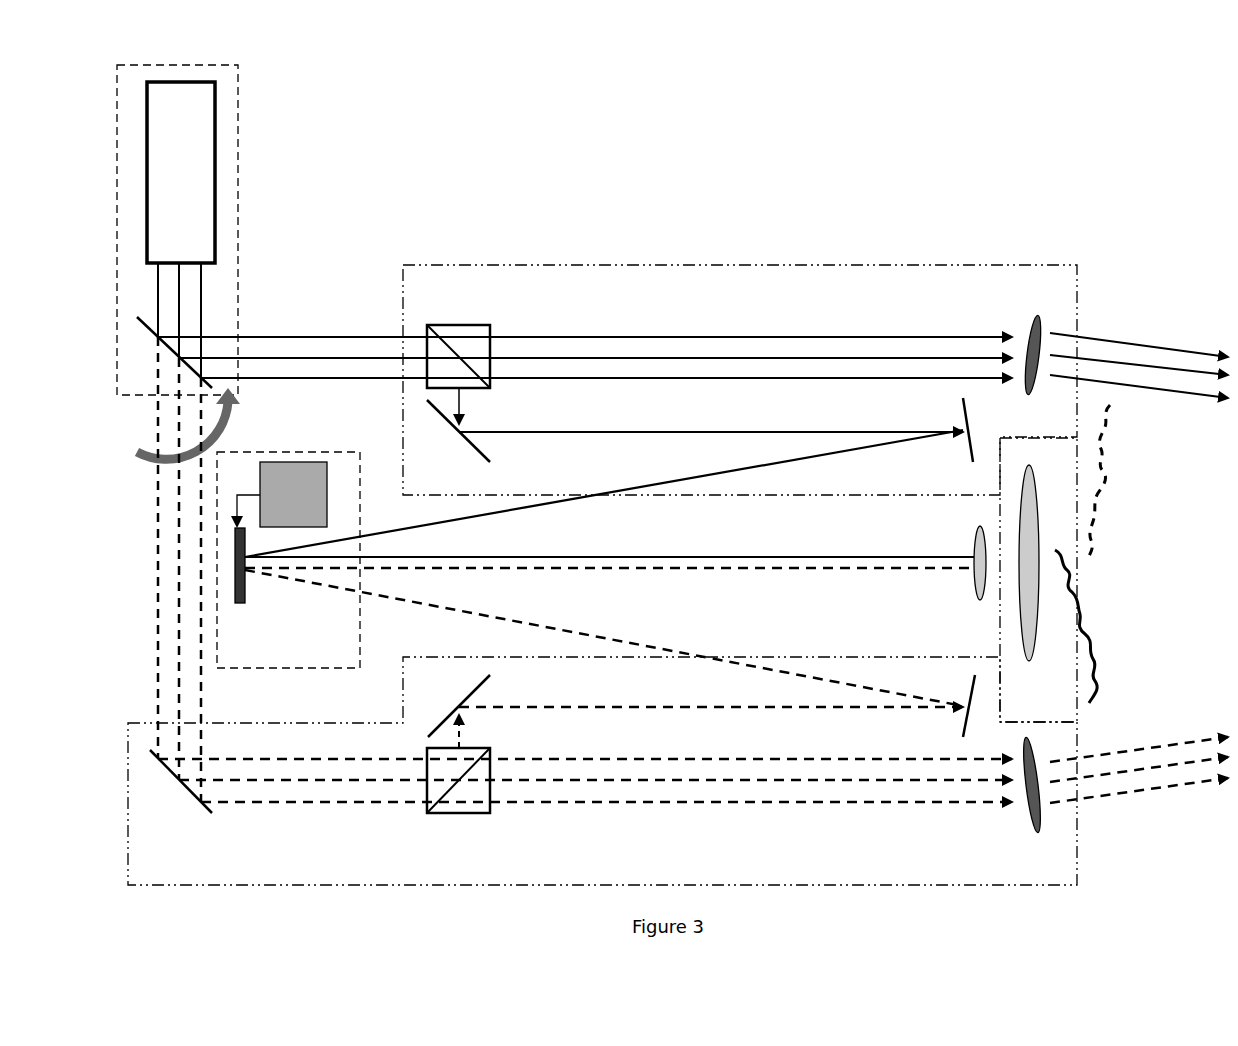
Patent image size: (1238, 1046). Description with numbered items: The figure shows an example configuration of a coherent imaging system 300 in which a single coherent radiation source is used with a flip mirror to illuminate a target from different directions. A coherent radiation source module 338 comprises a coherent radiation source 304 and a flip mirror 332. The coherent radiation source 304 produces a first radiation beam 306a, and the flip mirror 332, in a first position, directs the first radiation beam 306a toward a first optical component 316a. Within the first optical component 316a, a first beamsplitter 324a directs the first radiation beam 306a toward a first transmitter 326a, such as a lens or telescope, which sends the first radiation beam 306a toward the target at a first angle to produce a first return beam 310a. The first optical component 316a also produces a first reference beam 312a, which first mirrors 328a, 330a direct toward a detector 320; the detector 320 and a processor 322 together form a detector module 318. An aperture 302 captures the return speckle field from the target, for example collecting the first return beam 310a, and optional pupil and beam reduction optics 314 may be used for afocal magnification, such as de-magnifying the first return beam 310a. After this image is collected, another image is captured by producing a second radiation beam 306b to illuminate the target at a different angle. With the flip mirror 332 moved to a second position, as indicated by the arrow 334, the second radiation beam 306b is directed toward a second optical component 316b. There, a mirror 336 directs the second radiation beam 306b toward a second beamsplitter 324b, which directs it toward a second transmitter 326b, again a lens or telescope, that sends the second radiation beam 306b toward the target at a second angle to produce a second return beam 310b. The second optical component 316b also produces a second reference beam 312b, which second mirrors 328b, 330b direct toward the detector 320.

The coherent imaging system 300 is at (956, 172).
The aperture 302 is at (1032, 662).
The coherent radiation source 304 is at (181, 230).
The first radiation beam 306a is at (280, 332).
The second radiation beam 306b is at (150, 600).
The first return beam 310a is at (757, 555).
The second return beam 310b is at (712, 572).
The first reference beam 312a is at (588, 441).
The second reference beam 312b is at (570, 632).
The pupil and beam reduction optics 314 is at (1016, 633).
The first optical component 316a is at (582, 265).
The second optical component 316b is at (128, 832).
The detector module 318 is at (327, 668).
The detector 320 is at (271, 598).
The processor 322 is at (282, 494).
The first beamsplitter 324a is at (459, 322).
The second beamsplitter 324b is at (470, 815).
The first transmitter 326a is at (996, 334).
The second transmitter 326b is at (1001, 804).
The first mirror 328a is at (450, 430).
The second mirror 328b is at (453, 713).
The first mirror 330a is at (963, 418).
The second mirror 330b is at (963, 733).
The flip mirror 332 is at (143, 331).
The arrow 334 is at (157, 465).
The mirror 336 is at (183, 790).
The coherent radiation source module 338 is at (238, 155).